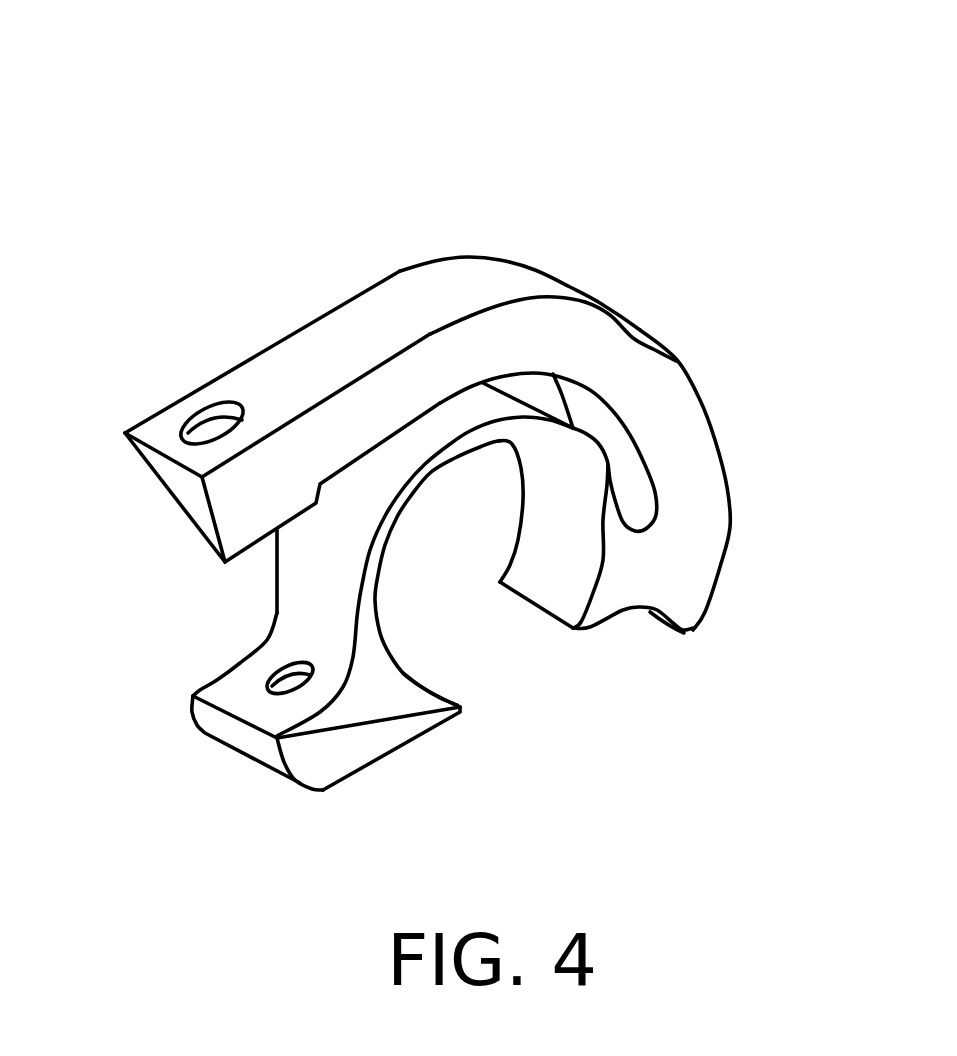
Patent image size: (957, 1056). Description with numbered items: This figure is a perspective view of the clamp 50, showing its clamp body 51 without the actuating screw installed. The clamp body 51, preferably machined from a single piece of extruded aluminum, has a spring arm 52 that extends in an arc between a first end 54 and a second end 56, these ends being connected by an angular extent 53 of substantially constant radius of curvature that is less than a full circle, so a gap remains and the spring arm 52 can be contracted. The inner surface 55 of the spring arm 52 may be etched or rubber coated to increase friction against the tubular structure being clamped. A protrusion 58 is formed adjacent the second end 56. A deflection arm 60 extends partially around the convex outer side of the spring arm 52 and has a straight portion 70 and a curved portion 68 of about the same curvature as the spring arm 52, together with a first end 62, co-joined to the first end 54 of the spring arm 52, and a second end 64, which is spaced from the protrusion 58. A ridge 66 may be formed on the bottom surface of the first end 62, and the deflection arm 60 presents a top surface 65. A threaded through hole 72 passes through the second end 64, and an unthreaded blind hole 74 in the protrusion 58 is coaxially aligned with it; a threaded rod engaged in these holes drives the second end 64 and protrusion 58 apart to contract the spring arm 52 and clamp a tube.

The clamp 50 is at (778, 150).
The clamp body 51 is at (533, 262).
The spring arm 52 is at (423, 442).
The angular extent 53 is at (413, 493).
The first end 54 is at (573, 630).
The inner surface 55 is at (533, 560).
The second end 56 is at (461, 722).
The protrusion 58 is at (297, 788).
The deflection arm 60 is at (600, 303).
The first end 62 is at (724, 565).
The second end 64 is at (178, 520).
The top surface 65 is at (272, 392).
The ridge 66 is at (694, 632).
The curved portion 68 is at (680, 358).
The straight portion 70 is at (313, 322).
The threaded through hole 72 is at (198, 415).
The blind hole 74 is at (270, 693).